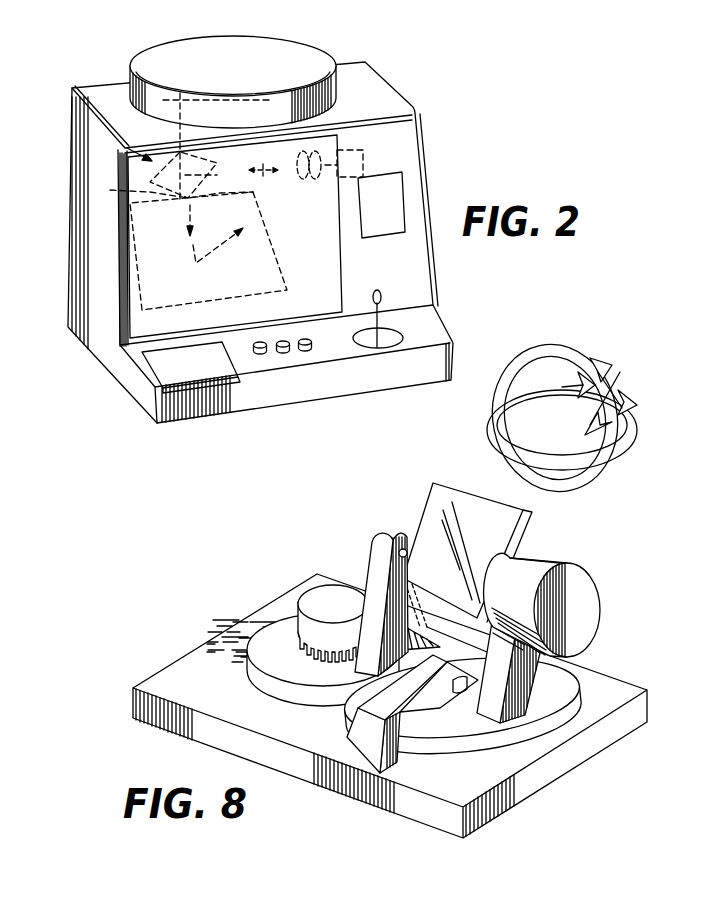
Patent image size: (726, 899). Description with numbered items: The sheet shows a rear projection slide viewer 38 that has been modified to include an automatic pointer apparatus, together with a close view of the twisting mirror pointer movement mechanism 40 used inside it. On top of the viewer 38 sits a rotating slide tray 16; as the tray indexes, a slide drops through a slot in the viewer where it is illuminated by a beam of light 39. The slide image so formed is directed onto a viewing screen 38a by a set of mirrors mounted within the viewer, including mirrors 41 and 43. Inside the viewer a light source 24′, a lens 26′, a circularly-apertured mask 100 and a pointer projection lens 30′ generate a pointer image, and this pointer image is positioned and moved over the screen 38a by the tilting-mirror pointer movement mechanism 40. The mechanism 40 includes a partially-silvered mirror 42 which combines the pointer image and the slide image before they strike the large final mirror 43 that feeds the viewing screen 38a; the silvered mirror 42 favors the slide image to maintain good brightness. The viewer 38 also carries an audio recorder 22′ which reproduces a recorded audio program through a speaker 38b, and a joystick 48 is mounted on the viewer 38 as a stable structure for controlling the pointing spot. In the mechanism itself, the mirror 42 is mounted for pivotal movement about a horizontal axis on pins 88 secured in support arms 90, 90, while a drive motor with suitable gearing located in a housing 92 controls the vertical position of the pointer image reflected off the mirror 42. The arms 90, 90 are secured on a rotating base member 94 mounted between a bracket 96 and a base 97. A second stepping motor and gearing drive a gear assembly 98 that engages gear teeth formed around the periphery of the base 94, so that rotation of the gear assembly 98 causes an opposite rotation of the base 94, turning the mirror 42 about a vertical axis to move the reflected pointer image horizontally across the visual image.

In FIG. 2, the rotating slide tray 16 is at (302, 47).
In FIG. 2, the rear projection slide viewer 38 is at (430, 123).
In FIG. 2, the viewing screen 38a is at (327, 193).
In FIG. 2, the speaker 38b is at (398, 193).
In FIG. 2, the beam of light 39 is at (218, 92).
In FIG. 2, the tilting-mirror pointer movement mechanism 40 is at (124, 148).
In FIG. 8, the tilting-mirror pointer movement mechanism 40 is at (612, 530).
In FIG. 2, the mirror 41 is at (130, 62).
In FIG. 2, the partially-silvered mirror 42 is at (133, 190).
In FIG. 8, the partially-silvered mirror 42 is at (470, 495).
In FIG. 2, the large final mirror 43 is at (135, 290).
In FIG. 2, the circularly-apertured mask 100 is at (225, 251).
In FIG. 2, the pointer projection lens 30′ is at (215, 234).
In FIG. 2, the lens 26′ is at (310, 145).
In FIG. 2, the light source 24′ is at (350, 155).
In FIG. 2, the joystick 48 is at (388, 323).
In FIG. 2, the audio recorder 22′ is at (238, 380).
In FIG. 8, the pins 88 is at (406, 545).
In FIG. 8, the support arms 90 is at (377, 550).
In FIG. 8, the housing 92 is at (600, 592).
In FIG. 8, the rotating base member 94 is at (492, 745).
In FIG. 8, the bracket 96 is at (378, 708).
In FIG. 8, the base 97 is at (383, 807).
In FIG. 8, the gear assembly 98 is at (267, 625).